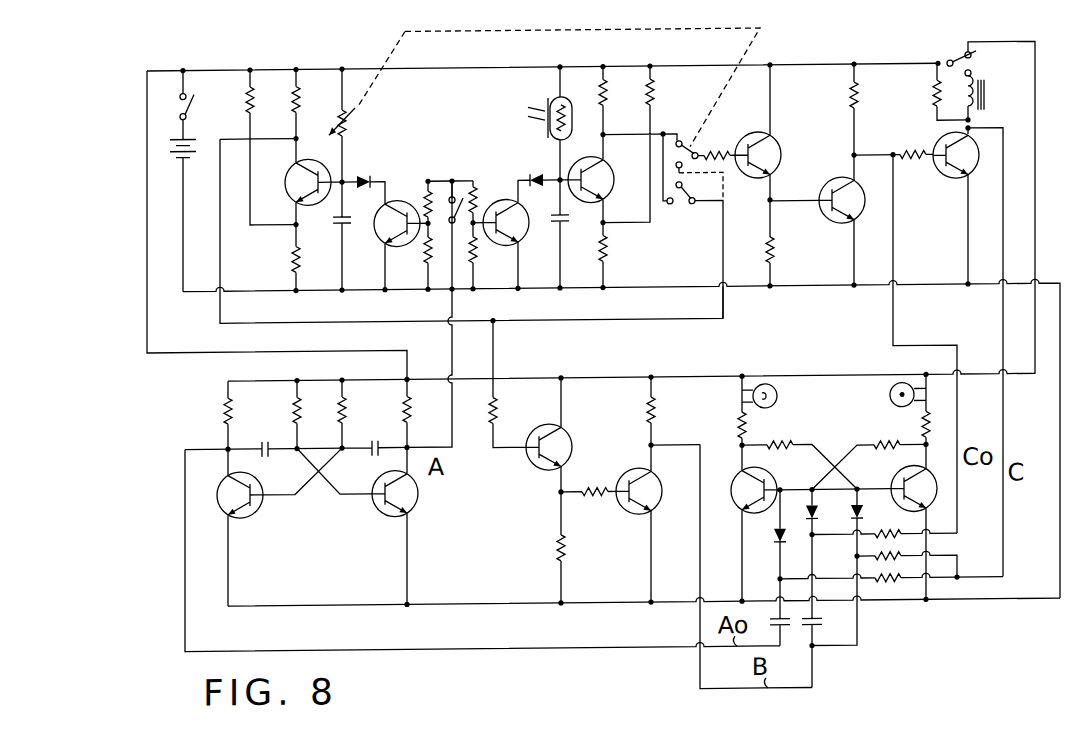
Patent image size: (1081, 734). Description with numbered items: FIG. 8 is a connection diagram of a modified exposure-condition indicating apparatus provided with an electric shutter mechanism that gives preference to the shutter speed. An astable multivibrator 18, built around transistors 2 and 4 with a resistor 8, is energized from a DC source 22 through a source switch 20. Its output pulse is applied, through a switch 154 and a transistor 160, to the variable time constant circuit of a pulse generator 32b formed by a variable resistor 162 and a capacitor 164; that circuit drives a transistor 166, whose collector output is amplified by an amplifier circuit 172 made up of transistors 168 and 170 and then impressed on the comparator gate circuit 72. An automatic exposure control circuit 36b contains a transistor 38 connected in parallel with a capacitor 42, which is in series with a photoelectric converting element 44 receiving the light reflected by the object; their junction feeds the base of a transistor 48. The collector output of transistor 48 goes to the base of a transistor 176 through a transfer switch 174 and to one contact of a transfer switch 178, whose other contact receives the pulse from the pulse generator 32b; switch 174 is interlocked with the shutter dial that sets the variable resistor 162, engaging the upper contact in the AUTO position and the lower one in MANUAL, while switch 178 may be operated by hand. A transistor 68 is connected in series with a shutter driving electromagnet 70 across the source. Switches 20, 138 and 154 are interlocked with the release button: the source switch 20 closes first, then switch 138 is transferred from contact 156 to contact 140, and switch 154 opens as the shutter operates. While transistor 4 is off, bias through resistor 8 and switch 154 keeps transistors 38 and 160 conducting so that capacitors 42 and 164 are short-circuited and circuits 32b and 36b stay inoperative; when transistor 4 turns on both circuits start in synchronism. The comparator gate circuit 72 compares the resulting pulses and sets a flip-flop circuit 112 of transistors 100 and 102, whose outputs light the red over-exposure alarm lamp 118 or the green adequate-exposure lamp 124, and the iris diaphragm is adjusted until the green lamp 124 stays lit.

The transistor 2 is at (258, 514).
The transistor 4 is at (378, 514).
The resistor 8 is at (402, 419).
The astable multivibrator 18 is at (296, 557).
The source switch 20 is at (200, 104).
The source of DC supply 22 is at (172, 216).
The pulse generator 32b is at (305, 60).
The automatic exposure control circuit 36b is at (600, 60).
The transistor 38 is at (530, 238).
The capacitor 42 is at (565, 230).
The photoelectric converting element 44 is at (550, 125).
The transistor 48 is at (614, 182).
The transistor 68 is at (936, 175).
The shutter driving electromagnet 70 is at (988, 110).
The comparator gate circuit 72 is at (822, 572).
The transistor 100 is at (730, 505).
The transistor 102 is at (936, 503).
The flip-flop circuit 112 is at (811, 444).
The over exposure condition alarm indicating lamp 118 is at (780, 399).
The adequate exposure condition indicating lamp 124 is at (885, 398).
The switch 138 is at (958, 62).
The contact 140 is at (975, 82).
The switch 154 is at (457, 194).
The contact 156 is at (990, 55).
The transistor 160 is at (418, 247).
The variable resistor 162 is at (363, 125).
The capacitor 164 is at (343, 236).
The transistor 166 is at (316, 268).
The transistor 168 is at (526, 462).
The transistor 170 is at (630, 518).
The amplifier circuit 172 is at (588, 444).
The transfer switch 174 is at (695, 132).
The transistor 176 is at (782, 165).
The transfer switch 178 is at (689, 226).